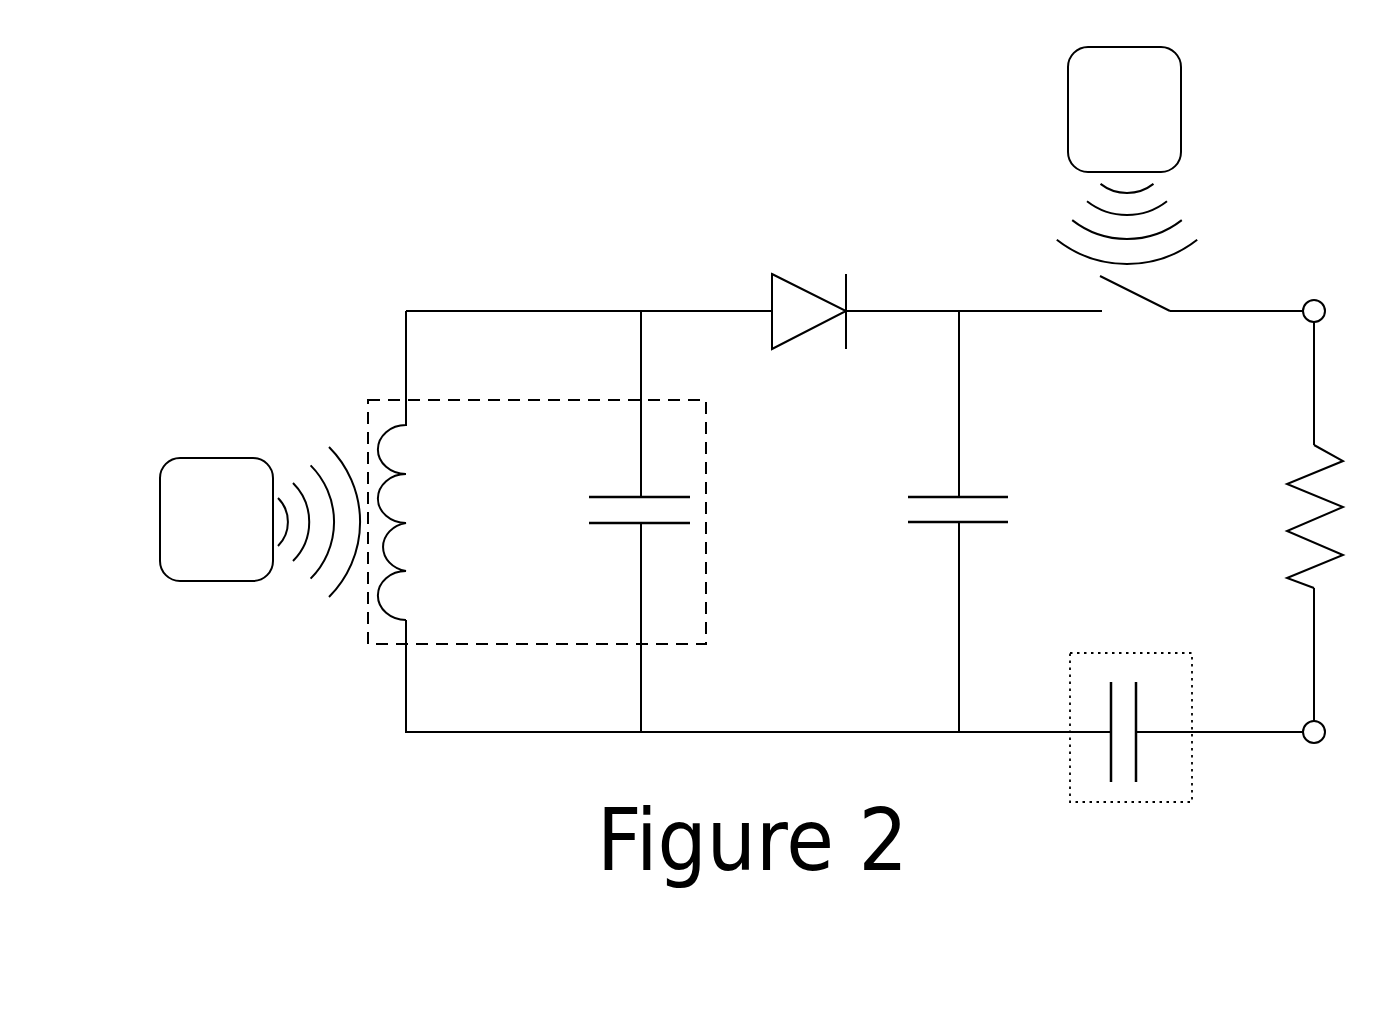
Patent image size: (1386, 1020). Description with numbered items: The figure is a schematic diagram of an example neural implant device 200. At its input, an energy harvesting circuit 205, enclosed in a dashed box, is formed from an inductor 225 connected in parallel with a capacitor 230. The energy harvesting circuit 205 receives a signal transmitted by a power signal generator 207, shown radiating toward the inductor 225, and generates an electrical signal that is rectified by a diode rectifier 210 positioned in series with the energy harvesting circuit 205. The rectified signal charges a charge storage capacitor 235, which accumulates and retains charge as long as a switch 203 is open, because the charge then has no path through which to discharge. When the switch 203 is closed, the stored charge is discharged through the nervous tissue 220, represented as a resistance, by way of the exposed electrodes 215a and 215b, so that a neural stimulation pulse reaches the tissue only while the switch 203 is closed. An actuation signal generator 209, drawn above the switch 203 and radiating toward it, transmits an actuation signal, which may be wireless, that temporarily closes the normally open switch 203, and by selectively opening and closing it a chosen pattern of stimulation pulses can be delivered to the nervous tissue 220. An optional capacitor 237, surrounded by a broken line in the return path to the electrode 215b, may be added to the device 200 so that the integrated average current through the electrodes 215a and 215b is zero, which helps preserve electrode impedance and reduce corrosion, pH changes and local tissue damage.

The neural implant device 200 is at (733, 53).
The switch 203 is at (1143, 313).
The energy harvesting circuit 205 is at (368, 415).
The power signal generator 207 is at (260, 522).
The actuation signal generator 209 is at (1127, 155).
The diode rectifier 210 is at (809, 298).
The exposed electrode 215a is at (1314, 297).
The exposed electrode 215b is at (1314, 747).
The nervous tissue 220 is at (1294, 516).
The inductor 225 is at (417, 465).
The capacitor 230 is at (641, 527).
The charge storage capacitor 235 is at (960, 528).
The capacitor 237 is at (1131, 727).